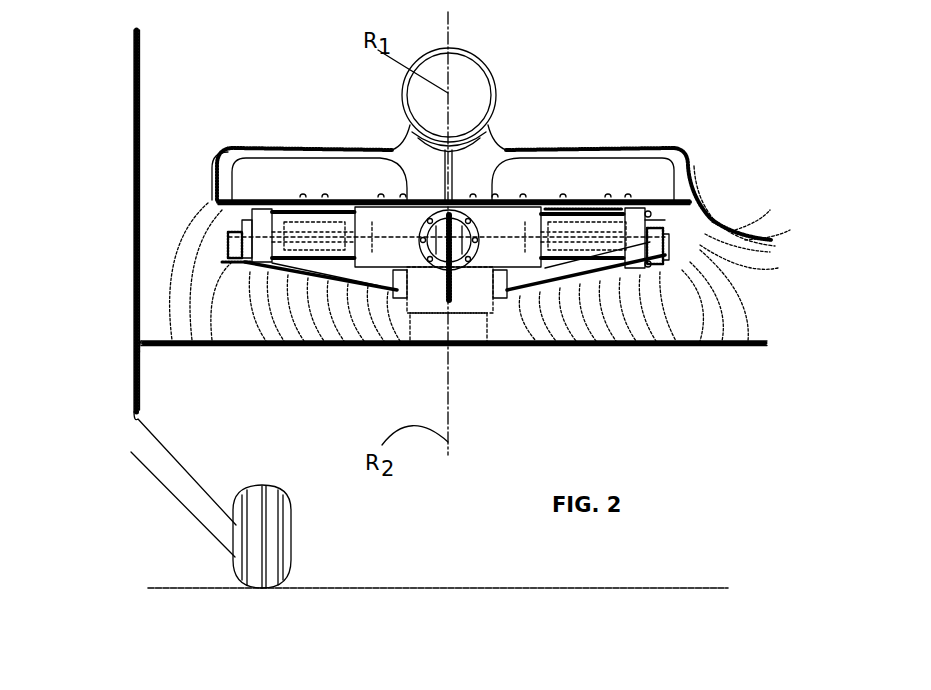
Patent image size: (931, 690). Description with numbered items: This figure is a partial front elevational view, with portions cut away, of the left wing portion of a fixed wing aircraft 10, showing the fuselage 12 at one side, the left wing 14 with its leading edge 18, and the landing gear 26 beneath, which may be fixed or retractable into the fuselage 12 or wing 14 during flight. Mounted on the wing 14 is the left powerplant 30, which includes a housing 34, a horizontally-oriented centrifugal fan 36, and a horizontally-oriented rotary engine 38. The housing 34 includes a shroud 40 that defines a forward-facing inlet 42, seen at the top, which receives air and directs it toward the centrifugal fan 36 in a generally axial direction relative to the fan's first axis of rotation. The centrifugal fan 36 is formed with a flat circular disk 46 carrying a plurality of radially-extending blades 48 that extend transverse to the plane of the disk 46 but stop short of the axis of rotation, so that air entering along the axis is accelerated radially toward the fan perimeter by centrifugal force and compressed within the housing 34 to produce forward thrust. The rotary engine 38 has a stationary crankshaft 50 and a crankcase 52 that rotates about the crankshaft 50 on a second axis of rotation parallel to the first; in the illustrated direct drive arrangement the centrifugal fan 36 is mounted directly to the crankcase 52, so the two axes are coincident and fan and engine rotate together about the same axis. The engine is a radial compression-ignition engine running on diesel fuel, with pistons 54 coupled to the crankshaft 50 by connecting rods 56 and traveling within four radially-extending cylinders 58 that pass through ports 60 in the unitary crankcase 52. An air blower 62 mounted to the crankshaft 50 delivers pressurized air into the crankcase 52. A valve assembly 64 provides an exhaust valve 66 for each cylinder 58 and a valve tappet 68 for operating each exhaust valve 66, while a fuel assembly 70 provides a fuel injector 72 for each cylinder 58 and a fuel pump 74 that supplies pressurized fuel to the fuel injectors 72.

The fixed wing aircraft 10 is at (745, 102).
The fuselage 12 is at (140, 72).
The left wing 14 is at (688, 243).
The leading edge 18 is at (230, 345).
The landing gear 26 is at (292, 500).
The powerplant 30 is at (658, 92).
The housing 34 is at (340, 147).
The centrifugal fan 36 is at (240, 165).
The rotary engine 38 is at (235, 233).
The shroud 40 is at (685, 178).
The forward-facing inlet 42 is at (495, 97).
The flat circular disk 46 is at (232, 200).
The radially-extending blades 48 is at (305, 165).
The stationary crankshaft 50 is at (495, 347).
The crankcase 52 is at (502, 213).
The pistons 54 is at (592, 232).
The connecting rods 56 is at (375, 260).
The radially-extending cylinders 58 is at (582, 213).
The ports 60 is at (545, 210).
The air blower 62 is at (425, 333).
The valve assembly 64 is at (655, 222).
The exhaust valve 66 is at (668, 265).
The valve tappet 68 is at (640, 268).
The fuel assembly 70 is at (668, 230).
The fuel injector 72 is at (667, 240).
The fuel pump 74 is at (525, 287).